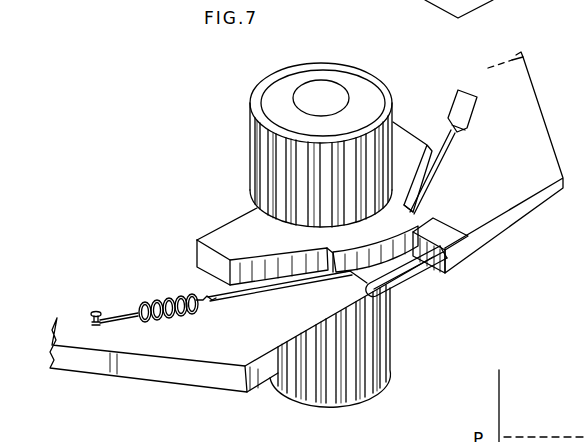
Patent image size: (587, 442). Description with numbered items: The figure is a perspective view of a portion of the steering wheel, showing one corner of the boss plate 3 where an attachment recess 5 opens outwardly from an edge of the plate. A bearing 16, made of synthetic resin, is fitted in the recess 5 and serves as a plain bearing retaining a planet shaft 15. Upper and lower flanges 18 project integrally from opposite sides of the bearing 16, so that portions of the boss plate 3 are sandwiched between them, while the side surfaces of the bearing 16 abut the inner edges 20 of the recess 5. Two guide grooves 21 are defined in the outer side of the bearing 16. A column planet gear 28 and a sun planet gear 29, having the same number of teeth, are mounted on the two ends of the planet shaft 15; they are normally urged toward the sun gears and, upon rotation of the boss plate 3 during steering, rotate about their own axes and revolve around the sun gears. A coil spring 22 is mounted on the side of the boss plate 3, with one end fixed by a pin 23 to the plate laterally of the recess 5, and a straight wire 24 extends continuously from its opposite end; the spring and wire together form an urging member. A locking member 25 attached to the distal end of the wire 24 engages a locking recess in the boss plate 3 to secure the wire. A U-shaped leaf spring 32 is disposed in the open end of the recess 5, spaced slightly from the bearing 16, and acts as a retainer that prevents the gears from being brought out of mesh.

The boss plate 3 is at (538, 131).
The attachment recess 5 is at (444, 9).
The planet shaft 15 is at (340, 97).
The bearing 16 is at (247, 214).
The flange 18 is at (406, 141).
The inner edge 20 is at (421, 244).
The guide groove 21 is at (352, 276).
The coil spring 22 is at (178, 297).
The pin 23 is at (96, 311).
The straight wire 24 is at (431, 170).
The locking member 25 is at (460, 98).
The column planet gear 28 is at (325, 405).
The sun planet gear 29 is at (277, 93).
The leaf spring 32 is at (405, 284).